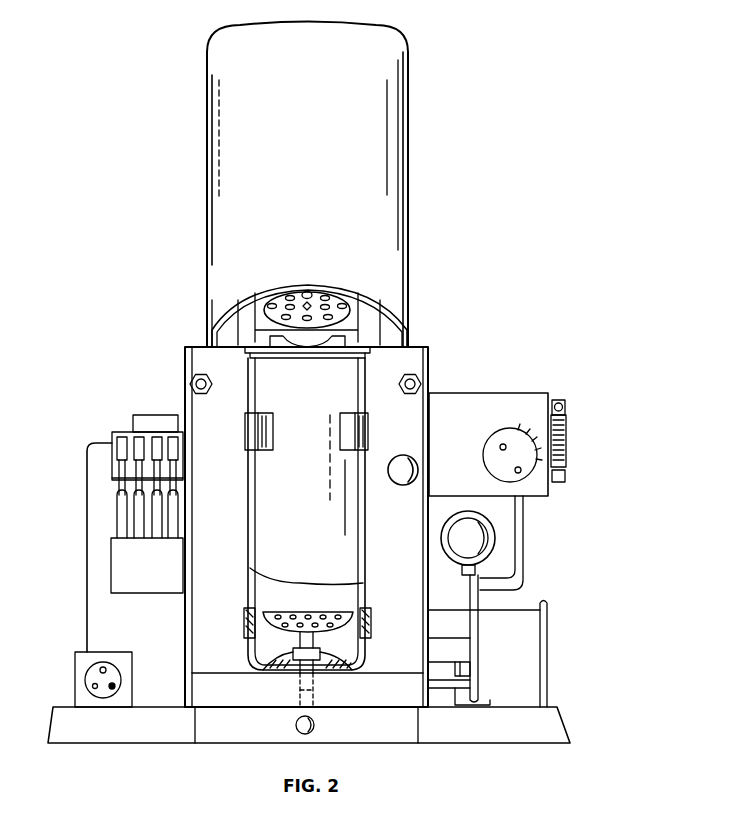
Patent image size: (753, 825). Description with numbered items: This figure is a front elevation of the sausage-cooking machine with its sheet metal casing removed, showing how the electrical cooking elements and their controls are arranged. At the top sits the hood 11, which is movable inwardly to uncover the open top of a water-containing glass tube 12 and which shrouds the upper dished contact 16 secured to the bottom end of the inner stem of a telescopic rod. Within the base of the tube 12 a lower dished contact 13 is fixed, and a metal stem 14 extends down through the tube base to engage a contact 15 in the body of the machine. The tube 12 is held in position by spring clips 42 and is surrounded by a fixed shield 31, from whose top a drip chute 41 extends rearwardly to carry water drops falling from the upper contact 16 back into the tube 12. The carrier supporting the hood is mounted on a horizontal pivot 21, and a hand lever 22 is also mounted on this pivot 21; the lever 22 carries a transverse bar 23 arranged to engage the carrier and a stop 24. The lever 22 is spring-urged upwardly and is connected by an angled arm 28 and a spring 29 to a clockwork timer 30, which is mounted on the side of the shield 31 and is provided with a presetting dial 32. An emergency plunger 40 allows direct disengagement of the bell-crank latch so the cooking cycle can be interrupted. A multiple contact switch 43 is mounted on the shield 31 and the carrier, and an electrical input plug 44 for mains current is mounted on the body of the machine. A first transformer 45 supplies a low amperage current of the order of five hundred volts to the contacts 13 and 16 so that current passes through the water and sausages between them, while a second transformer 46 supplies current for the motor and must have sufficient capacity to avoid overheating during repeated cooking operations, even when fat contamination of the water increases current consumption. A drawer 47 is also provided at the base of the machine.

The hood 11 is at (316, 164).
The water-containing glass tube 12 is at (319, 526).
The lower dished contact 13 is at (263, 620).
The metal stem 14 is at (300, 682).
The contact 15 is at (313, 697).
The upper dished contact 16 is at (333, 300).
The horizontal pivot 21 is at (463, 684).
The hand lever 22 is at (495, 538).
The transverse bar 23 is at (462, 650).
The stop 24 is at (462, 669).
The angled arm 28 is at (524, 522).
The spring 29 is at (566, 438).
The clockwork timer 30 is at (510, 397).
The fixed shield 31 is at (415, 363).
The presetting dial 32 is at (486, 464).
The emergency plunger 40 is at (400, 485).
The drip chute 41 is at (355, 340).
The spring clips 42 is at (245, 438).
The multiple contact switch 43 is at (121, 512).
The electrical input plug 44 is at (90, 684).
The first transformer 45 is at (90, 450).
The second transformer 46 is at (548, 622).
The drawer 47 is at (212, 735).